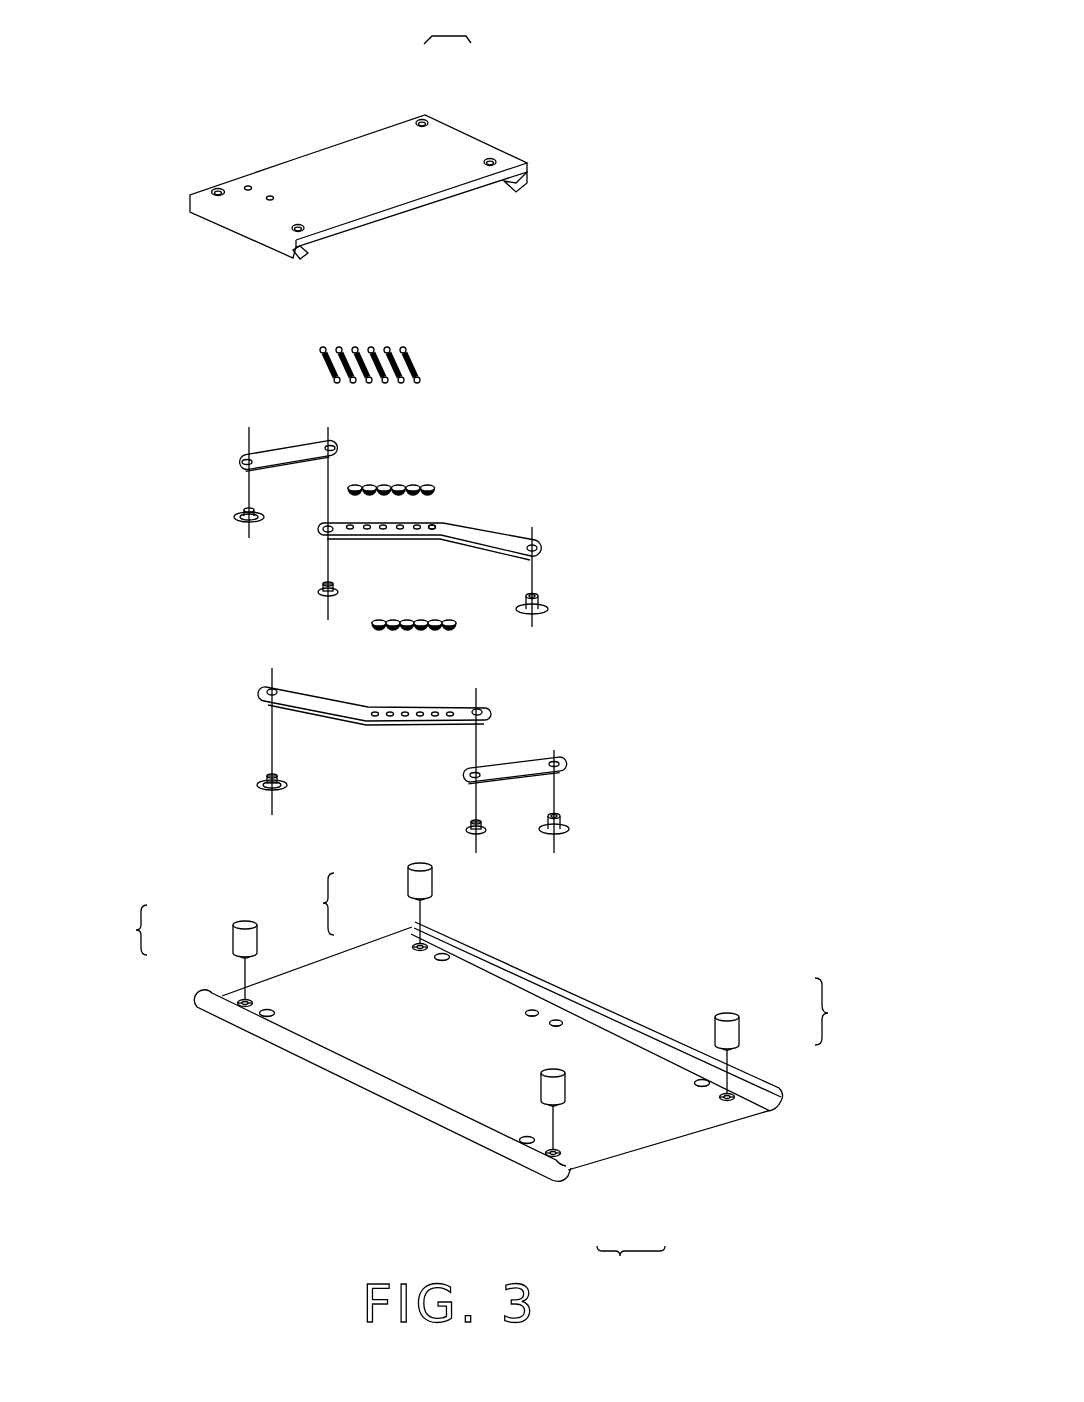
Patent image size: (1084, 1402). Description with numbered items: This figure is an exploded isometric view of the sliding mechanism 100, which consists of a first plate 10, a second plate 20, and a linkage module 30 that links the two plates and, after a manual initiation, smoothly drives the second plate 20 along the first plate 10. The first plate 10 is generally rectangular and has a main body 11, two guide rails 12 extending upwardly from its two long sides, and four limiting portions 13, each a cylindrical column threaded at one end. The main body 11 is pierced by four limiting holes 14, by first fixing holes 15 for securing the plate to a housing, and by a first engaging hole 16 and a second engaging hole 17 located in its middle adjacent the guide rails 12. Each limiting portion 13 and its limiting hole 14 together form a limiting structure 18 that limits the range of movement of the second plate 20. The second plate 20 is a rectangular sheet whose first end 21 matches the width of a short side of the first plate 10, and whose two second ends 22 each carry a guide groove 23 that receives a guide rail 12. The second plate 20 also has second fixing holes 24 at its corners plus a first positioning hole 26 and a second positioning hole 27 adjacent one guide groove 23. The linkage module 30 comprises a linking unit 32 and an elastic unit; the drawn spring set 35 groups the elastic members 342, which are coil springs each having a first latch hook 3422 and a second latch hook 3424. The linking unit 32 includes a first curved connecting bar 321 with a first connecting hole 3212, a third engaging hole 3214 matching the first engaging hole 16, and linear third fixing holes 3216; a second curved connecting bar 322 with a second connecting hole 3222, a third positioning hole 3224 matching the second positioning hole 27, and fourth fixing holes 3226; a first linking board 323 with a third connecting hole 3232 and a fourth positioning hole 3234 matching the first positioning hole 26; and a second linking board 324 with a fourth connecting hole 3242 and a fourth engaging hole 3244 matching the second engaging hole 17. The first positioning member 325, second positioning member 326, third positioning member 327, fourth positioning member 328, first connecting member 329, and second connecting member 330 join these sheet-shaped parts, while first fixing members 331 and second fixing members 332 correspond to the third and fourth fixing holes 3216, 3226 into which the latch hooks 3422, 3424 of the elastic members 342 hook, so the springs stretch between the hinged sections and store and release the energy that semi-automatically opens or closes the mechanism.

The sliding mechanism 100 is at (449, 25).
The first plate 10 is at (656, 992).
The main body 11 is at (430, 1072).
The guide rail 12 is at (332, 1067).
The limiting portion 13 is at (243, 928).
The limiting hole 14 is at (240, 1000).
The first fixing hole 15 is at (265, 1017).
The first engaging hole 16 is at (532, 1009).
The second engaging hole 17 is at (557, 1019).
The limiting structure 18 is at (478, 1079).
The second plate 20 is at (338, 180).
The first end 21 is at (380, 190).
The second end 22 is at (235, 222).
The guide groove 23 is at (520, 178).
The second fixing hole 24 is at (214, 189).
The first positioning hole 26 is at (247, 185).
The second positioning hole 27 is at (270, 195).
The linkage module 30 is at (793, 335).
The linking unit 32 is at (683, 440).
The spring set 35 is at (317, 339).
The first curved connecting bar 321 is at (392, 546).
The second curved connecting bar 322 is at (371, 754).
The first linking board 323 is at (224, 481).
The second linking board 324 is at (572, 770).
The first positioning member 325 is at (546, 604).
The second positioning member 326 is at (258, 783).
The third positioning member 327 is at (234, 516).
The fourth positioning member 328 is at (566, 825).
The first connecting member 329 is at (318, 591).
The second connecting member 330 is at (467, 828).
The first fixing member 331 is at (345, 479).
The second fixing member 332 is at (370, 634).
The elastic member 342 is at (465, 381).
The first connecting hole 3212 is at (320, 534).
The third engaging hole 3214 is at (540, 546).
The third fixing hole 3216 is at (420, 523).
The second connecting hole 3222 is at (482, 710).
The third positioning hole 3224 is at (262, 690).
The fourth fixing hole 3226 is at (372, 717).
The third connecting hole 3232 is at (328, 445).
The fourth positioning hole 3234 is at (243, 461).
The fourth connecting hole 3242 is at (479, 773).
The fourth engaging hole 3244 is at (559, 763).
The first latch hook 3422 is at (412, 350).
The second latch hook 3424 is at (420, 372).